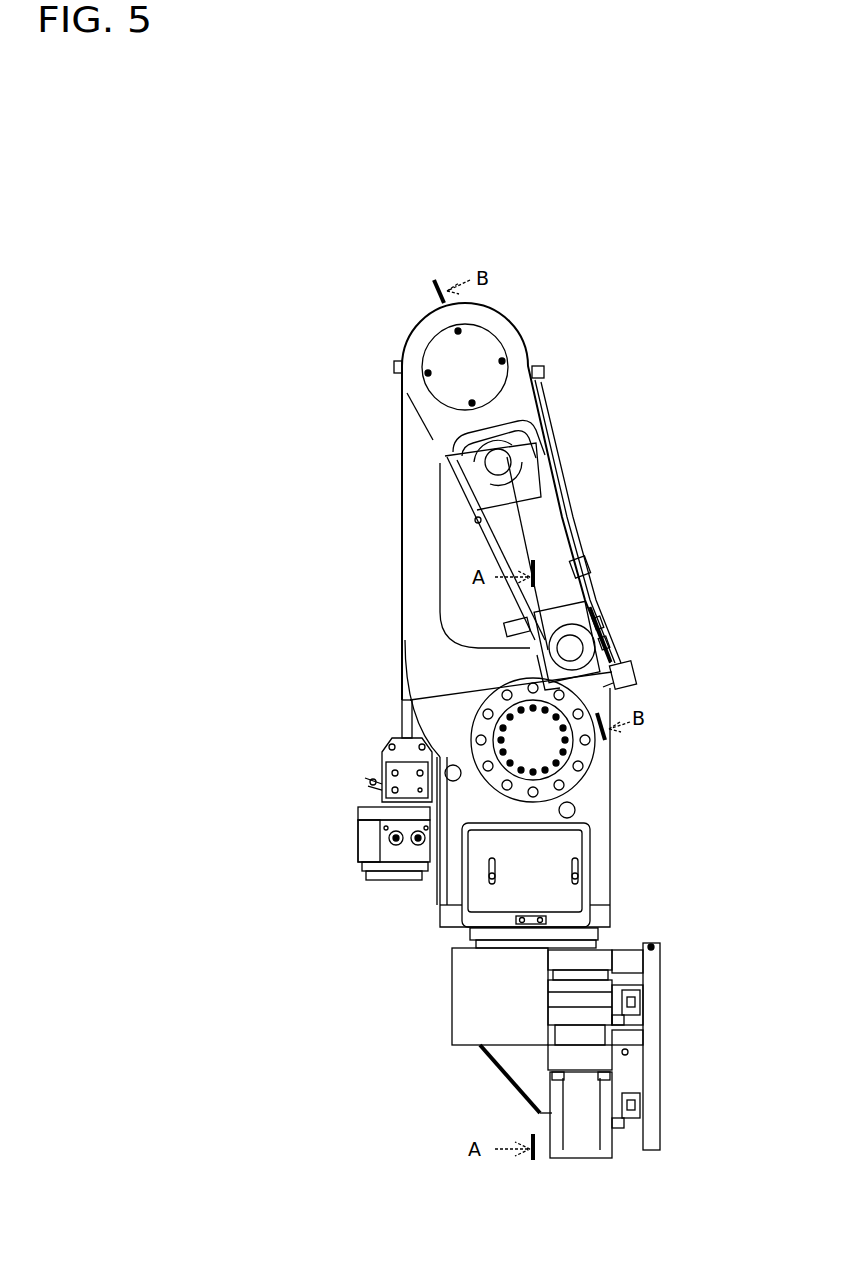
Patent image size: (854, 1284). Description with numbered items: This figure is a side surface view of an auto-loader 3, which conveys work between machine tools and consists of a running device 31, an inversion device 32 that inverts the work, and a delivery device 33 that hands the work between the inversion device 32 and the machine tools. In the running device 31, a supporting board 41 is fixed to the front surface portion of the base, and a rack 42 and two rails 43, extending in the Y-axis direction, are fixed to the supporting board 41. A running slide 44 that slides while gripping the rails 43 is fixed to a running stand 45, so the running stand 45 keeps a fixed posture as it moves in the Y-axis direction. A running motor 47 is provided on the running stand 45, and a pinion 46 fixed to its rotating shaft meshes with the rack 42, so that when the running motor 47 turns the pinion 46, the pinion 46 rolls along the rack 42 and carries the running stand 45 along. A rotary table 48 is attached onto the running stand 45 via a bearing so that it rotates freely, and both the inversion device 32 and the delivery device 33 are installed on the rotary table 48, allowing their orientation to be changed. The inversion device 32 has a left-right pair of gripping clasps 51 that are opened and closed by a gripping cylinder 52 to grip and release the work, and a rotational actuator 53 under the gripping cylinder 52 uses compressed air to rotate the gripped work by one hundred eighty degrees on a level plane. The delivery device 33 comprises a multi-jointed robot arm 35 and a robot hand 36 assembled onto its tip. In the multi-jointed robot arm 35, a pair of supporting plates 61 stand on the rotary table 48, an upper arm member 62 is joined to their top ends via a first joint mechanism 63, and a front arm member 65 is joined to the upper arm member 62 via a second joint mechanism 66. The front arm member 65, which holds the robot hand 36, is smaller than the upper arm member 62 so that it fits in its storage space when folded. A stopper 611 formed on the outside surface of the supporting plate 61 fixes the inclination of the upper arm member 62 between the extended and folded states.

The auto-loader 3 is at (300, 378).
The running device 31 is at (392, 1028).
The inversion device 32 is at (330, 774).
The delivery device 33 is at (705, 458).
The multi-jointed robot arm 35 is at (610, 490).
The robot hand 36 is at (612, 580).
The supporting board 41 is at (662, 1070).
The rack 42 is at (630, 960).
The rails 43 is at (640, 1003).
The running slide 44 is at (630, 1025).
The running stand 45 is at (486, 1047).
The pinion 46 is at (605, 945).
The running motor 47 is at (582, 1098).
The rotary table 48 is at (482, 942).
The gripping clasps 51 is at (404, 712).
The gripping cylinder 52 is at (395, 768).
The rotational actuator 53 is at (372, 831).
The supporting plates 61 is at (612, 750).
The stopper 611 is at (461, 778).
The upper arm member 62 is at (415, 597).
The first joint mechanism 63 is at (572, 764).
The front arm member 65 is at (553, 450).
The second joint mechanism 66 is at (483, 345).